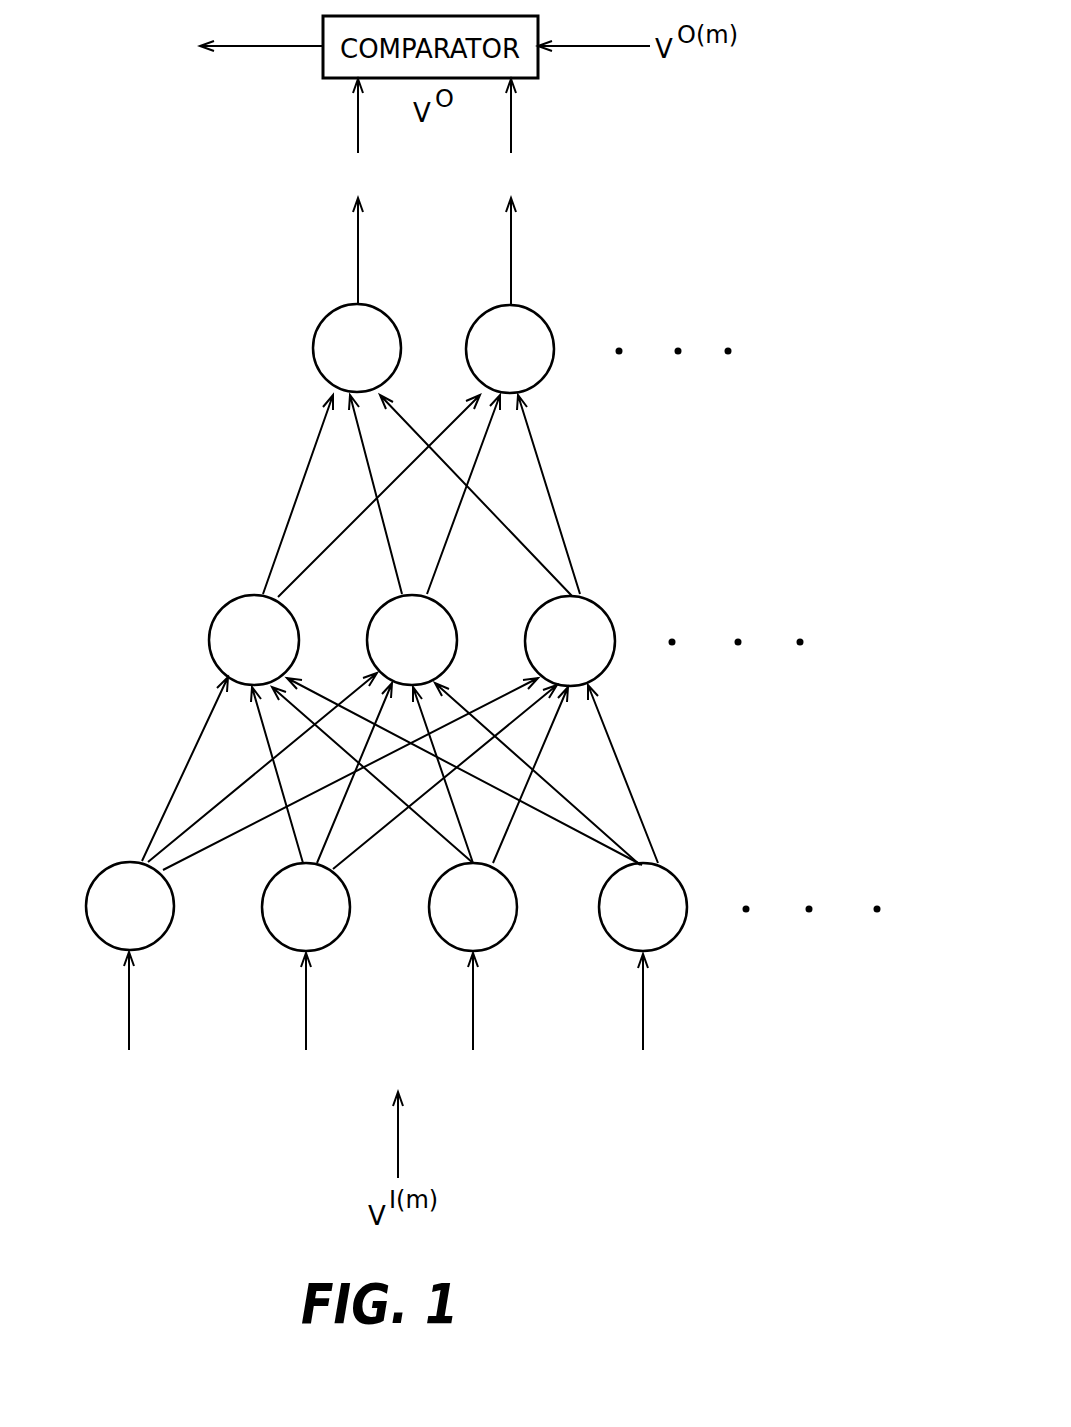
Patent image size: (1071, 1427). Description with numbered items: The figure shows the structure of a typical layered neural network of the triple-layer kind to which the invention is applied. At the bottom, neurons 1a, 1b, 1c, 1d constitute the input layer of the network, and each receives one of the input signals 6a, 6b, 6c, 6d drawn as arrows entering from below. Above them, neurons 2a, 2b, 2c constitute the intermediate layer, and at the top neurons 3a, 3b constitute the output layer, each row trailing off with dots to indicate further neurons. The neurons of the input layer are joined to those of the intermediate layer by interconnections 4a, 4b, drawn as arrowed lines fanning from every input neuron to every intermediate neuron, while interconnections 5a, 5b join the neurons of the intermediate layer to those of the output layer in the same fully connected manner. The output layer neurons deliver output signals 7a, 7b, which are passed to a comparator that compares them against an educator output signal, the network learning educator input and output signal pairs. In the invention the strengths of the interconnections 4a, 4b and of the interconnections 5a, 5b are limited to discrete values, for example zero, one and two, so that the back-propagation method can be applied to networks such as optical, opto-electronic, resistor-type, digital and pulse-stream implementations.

The input layer neuron 1a is at (130, 906).
The input layer neuron 1b is at (306, 907).
The input layer neuron 1c is at (473, 907).
The input layer neuron 1d is at (643, 907).
The intermediate layer neuron 2a is at (254, 640).
The intermediate layer neuron 2b is at (412, 640).
The intermediate layer neuron 2c is at (570, 641).
The output layer neuron 3a is at (357, 348).
The output layer neuron 3b is at (510, 349).
The interconnection between input layer and intermediate layer 4a is at (197, 738).
The interconnection between input layer and intermediate layer 4b is at (257, 737).
The interconnection between intermediate layer and output layer 5a is at (308, 462).
The interconnection between intermediate layer and output layer 5b is at (372, 483).
The input signal 6a is at (130, 1023).
The input signal 6b is at (306, 1024).
The input signal 6c is at (473, 1024).
The input signal 6d is at (646, 1024).
The output signal 7a is at (362, 191).
The output signal 7b is at (515, 192).